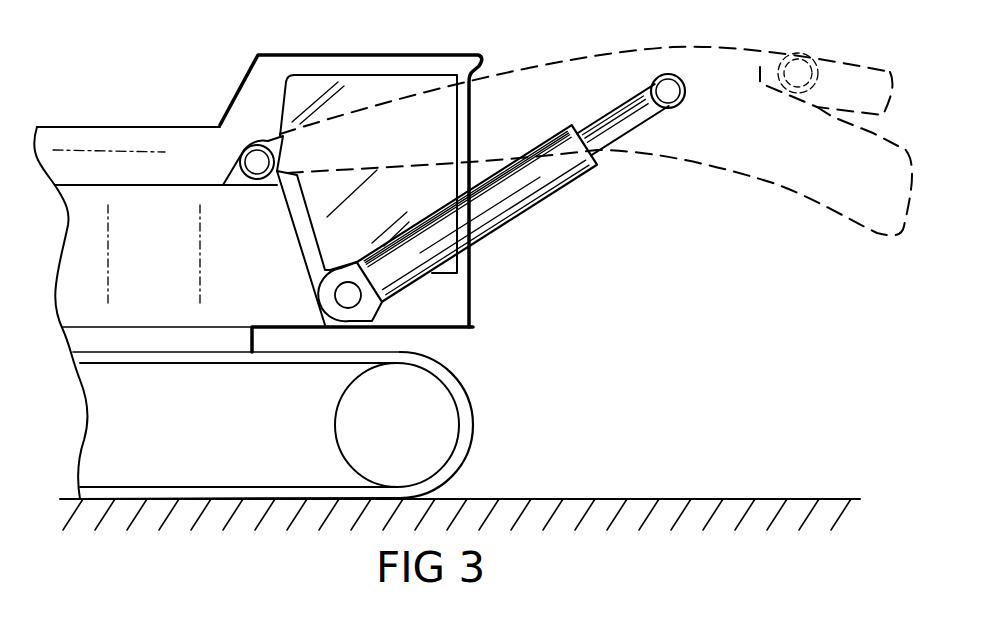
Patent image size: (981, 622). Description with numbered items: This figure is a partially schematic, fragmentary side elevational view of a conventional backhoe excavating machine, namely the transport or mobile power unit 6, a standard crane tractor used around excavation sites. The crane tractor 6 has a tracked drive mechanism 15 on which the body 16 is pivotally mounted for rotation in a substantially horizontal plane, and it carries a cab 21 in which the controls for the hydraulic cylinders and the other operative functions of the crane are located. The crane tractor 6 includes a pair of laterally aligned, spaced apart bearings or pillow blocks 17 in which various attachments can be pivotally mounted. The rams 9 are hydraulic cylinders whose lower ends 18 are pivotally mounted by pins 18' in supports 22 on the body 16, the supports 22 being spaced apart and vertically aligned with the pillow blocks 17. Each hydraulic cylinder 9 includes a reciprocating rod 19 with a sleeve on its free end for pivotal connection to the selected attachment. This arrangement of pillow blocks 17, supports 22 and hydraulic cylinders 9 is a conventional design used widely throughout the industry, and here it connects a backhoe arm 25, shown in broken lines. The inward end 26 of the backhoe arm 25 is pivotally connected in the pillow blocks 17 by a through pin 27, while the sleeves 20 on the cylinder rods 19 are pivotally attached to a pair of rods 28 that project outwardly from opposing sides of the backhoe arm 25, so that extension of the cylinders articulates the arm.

The transport or mobile power unit 6 is at (254, 48).
The rams 9 is at (427, 220).
The tracked drive mechanism 15 is at (463, 415).
The body 16 is at (108, 140).
The pillow blocks 17 is at (235, 178).
The lower ends 18 is at (391, 309).
The pins 18' is at (367, 285).
The reciprocating rod 19 is at (608, 118).
The sleeves 20 is at (683, 101).
The cab 21 is at (393, 87).
The supports 22 is at (325, 272).
The backhoe arm 25 is at (573, 72).
The inward end 26 is at (278, 150).
The through pin 27 is at (253, 160).
The rods 28 is at (672, 88).